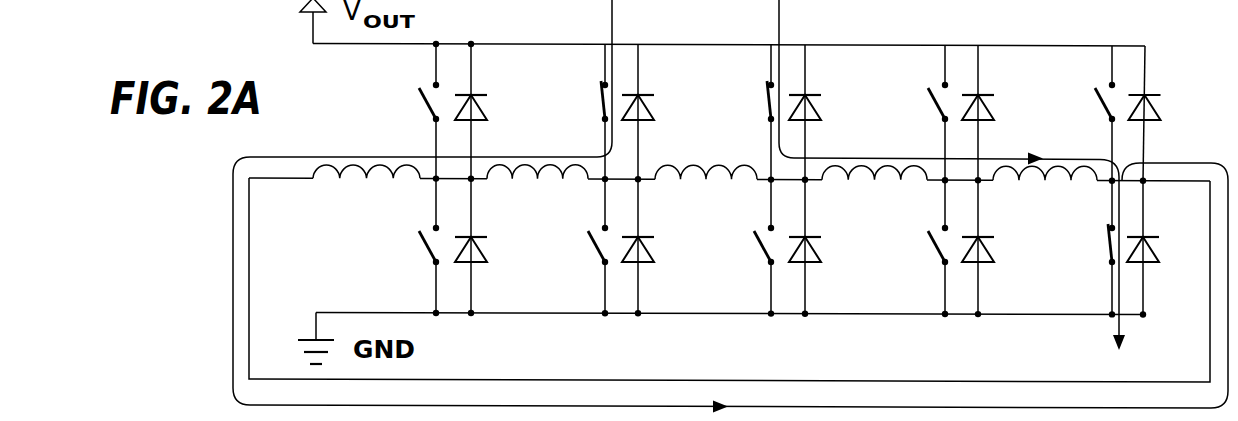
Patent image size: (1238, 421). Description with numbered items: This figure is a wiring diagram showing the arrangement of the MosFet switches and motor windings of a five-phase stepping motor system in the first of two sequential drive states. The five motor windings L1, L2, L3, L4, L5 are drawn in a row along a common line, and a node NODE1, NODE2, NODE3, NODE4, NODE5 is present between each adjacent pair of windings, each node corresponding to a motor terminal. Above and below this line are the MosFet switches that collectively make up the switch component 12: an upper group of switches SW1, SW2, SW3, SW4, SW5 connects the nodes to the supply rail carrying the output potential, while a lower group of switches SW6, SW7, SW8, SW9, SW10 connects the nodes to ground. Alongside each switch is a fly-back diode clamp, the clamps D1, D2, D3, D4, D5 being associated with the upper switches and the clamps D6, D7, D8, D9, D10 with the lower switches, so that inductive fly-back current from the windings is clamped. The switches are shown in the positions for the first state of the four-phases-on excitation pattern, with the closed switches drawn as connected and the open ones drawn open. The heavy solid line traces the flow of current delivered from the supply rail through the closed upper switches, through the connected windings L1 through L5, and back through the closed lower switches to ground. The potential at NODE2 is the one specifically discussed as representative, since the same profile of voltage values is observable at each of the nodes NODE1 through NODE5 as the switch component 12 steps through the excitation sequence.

The switch component 12 is at (218, 296).
The winding L1 is at (366, 184).
The winding L2 is at (537, 185).
The winding L3 is at (706, 184).
The winding L4 is at (874, 185).
The winding L5 is at (1045, 185).
The MosFet switch SW1 is at (402, 111).
The MosFet switch SW2 is at (575, 112).
The MosFet switch SW3 is at (741, 112).
The MosFet switch SW4 is at (907, 113).
The MosFet switch SW5 is at (1081, 113).
The MosFet switch SW6 is at (404, 246).
The MosFet switch SW7 is at (569, 246).
The MosFet switch SW8 is at (740, 247).
The MosFet switch SW9 is at (907, 247).
The MosFet switch SW10 is at (1077, 248).
The fly-back diode clamp D1 is at (487, 111).
The fly-back diode clamp D2 is at (661, 112).
The fly-back diode clamp D3 is at (823, 112).
The fly-back diode clamp D4 is at (1003, 113).
The fly-back diode clamp D5 is at (1162, 113).
The fly-back diode clamp D6 is at (489, 246).
The fly-back diode clamp D7 is at (663, 246).
The fly-back diode clamp D8 is at (823, 247).
The fly-back diode clamp D9 is at (1002, 247).
The fly-back diode clamp D10 is at (1165, 248).
The node NODE1 is at (449, 188).
The node NODE2 is at (626, 192).
The node NODE3 is at (788, 192).
The node NODE4 is at (963, 194).
The node NODE5 is at (1128, 194).